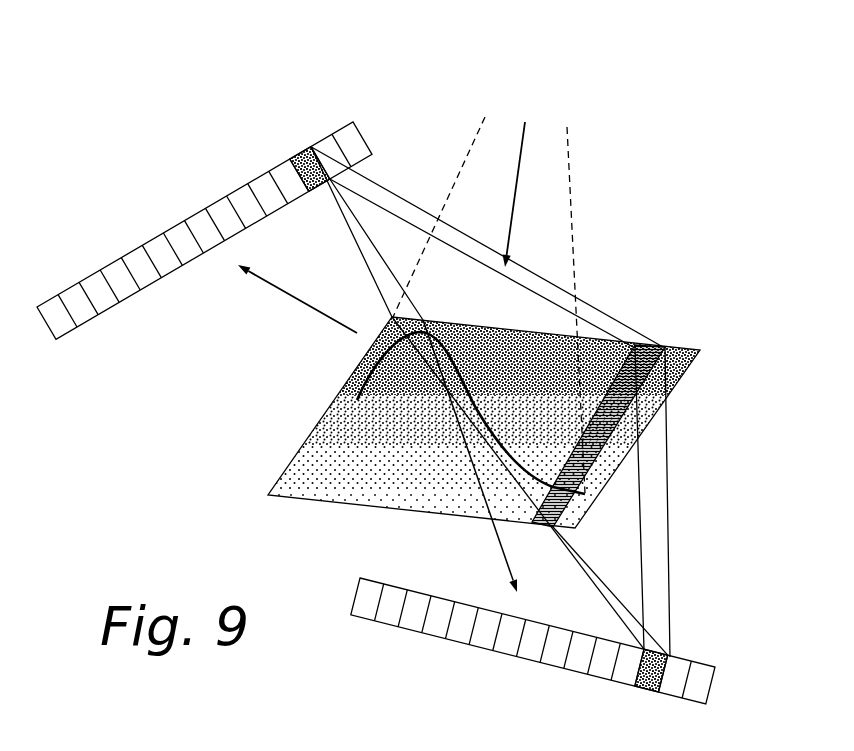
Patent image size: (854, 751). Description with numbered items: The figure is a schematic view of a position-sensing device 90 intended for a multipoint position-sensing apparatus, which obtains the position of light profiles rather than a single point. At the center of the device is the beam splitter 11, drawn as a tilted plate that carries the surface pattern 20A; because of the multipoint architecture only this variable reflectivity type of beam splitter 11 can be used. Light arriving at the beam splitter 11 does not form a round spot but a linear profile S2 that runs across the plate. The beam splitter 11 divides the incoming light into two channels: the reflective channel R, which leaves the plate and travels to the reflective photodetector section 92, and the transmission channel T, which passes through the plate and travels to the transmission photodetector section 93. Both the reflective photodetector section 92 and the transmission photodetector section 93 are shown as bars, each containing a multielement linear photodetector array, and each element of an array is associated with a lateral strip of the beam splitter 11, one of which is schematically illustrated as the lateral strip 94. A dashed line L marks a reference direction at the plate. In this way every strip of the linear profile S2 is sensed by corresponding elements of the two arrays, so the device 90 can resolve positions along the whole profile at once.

The beam splitter 11 is at (337, 502).
The surface pattern 20A is at (346, 446).
The position-sensing device 90 is at (222, 503).
The reflective photodetector section 92 is at (368, 105).
The transmission photodetector section 93 is at (698, 594).
The lateral strip 94 is at (556, 512).
The reflective channel R is at (400, 195).
The normal line L is at (573, 208).
The linear profile S2 is at (540, 478).
The transmission channel T is at (668, 487).